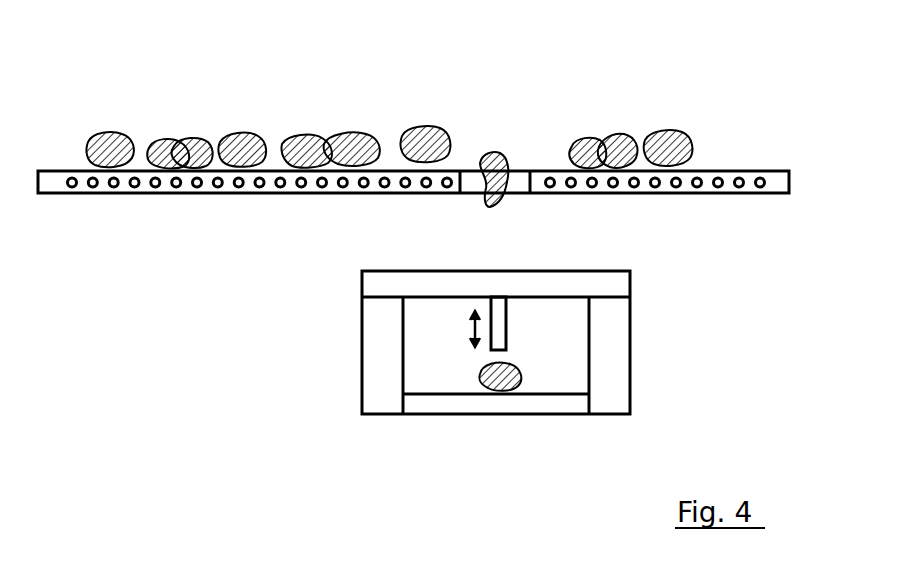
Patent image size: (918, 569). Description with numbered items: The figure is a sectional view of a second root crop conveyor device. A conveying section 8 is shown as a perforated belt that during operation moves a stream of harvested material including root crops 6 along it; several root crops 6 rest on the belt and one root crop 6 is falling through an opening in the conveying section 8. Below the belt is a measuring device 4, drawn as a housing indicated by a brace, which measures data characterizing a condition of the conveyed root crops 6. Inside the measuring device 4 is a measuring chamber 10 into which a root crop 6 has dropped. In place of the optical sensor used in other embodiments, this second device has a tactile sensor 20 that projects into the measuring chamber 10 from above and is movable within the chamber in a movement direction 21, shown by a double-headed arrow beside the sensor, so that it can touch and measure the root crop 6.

The measuring device 4 is at (333, 270).
The root crops 6 is at (433, 145).
The conveying section 8 is at (775, 183).
The measuring chamber 10 is at (441, 374).
The tactile sensor 20 is at (500, 328).
The movement direction 21 is at (470, 330).